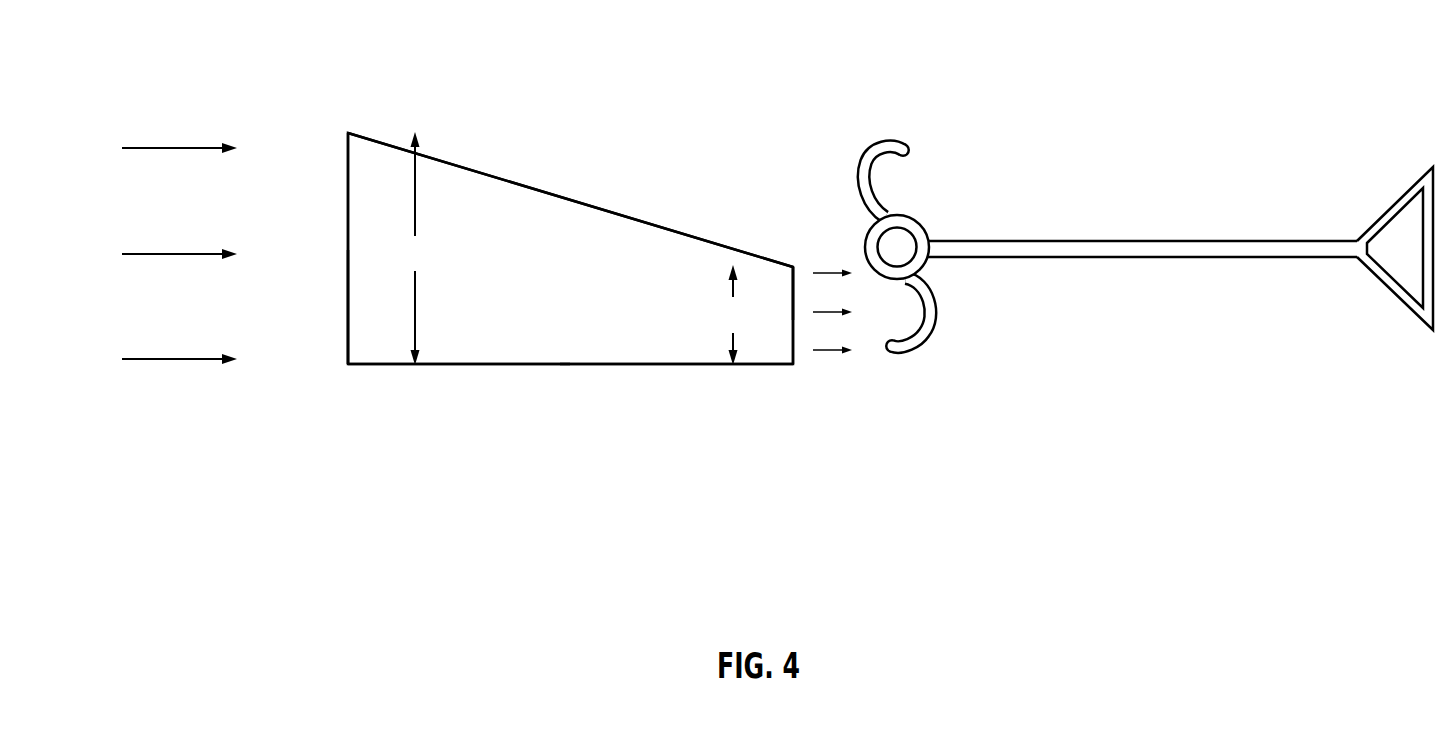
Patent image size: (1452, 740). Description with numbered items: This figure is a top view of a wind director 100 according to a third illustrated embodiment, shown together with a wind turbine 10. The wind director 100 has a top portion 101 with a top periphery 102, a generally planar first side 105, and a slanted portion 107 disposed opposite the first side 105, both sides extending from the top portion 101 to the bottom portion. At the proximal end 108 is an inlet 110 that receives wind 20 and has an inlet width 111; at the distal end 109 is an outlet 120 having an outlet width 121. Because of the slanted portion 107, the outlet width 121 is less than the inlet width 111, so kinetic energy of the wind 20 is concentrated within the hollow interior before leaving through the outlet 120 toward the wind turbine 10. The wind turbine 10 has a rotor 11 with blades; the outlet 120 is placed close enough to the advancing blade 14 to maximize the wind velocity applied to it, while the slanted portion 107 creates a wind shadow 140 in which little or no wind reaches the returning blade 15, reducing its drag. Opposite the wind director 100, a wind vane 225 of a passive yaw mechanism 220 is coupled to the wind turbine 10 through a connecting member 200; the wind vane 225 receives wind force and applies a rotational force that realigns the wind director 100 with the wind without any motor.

The wind director 100 is at (393, 49).
The top portion 101 is at (590, 294).
The top periphery 102 is at (443, 366).
The first side 105 is at (570, 366).
The slanted portion 107 is at (568, 202).
The proximal end 108 is at (348, 312).
The distal end 109 is at (793, 265).
The inlet 110 is at (348, 218).
The inlet width 111 is at (417, 248).
The outlet 120 is at (793, 345).
The outlet width 121 is at (736, 315).
The wind shadow 140 is at (737, 195).
The wind 20 is at (133, 124).
The wind turbine 10 is at (968, 114).
The rotor 11 is at (916, 226).
The advancing blade 14 is at (927, 340).
The returning blade 15 is at (898, 143).
The arm 200 is at (1087, 250).
The passive yaw mechanism 220 is at (1212, 258).
The wind vane 225 is at (1407, 213).